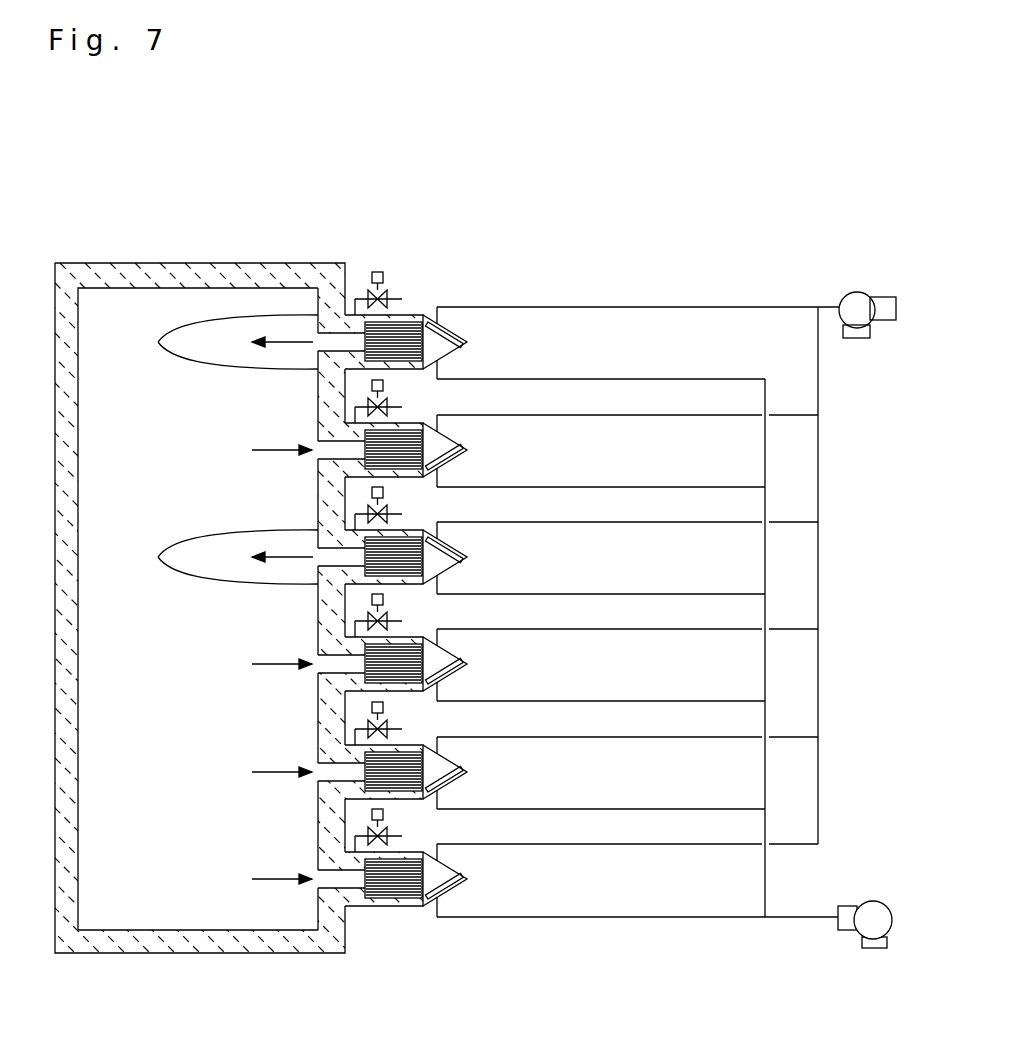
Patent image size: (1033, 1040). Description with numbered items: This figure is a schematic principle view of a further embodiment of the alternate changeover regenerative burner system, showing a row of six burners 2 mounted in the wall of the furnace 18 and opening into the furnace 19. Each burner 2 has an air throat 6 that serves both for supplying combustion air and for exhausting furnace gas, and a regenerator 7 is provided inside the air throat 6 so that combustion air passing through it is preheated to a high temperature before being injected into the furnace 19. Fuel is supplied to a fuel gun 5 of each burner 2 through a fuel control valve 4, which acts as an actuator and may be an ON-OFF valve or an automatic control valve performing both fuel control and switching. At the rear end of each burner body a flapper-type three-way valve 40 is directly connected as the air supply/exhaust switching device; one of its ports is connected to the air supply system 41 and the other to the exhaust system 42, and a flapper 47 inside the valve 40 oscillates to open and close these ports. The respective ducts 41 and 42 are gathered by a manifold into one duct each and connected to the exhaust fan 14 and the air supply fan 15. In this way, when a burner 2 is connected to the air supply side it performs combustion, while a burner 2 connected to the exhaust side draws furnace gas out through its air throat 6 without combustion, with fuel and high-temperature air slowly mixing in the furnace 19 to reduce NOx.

The burner 2 is at (424, 263).
The fuel control valve 4 is at (383, 272).
The fuel gun 5 is at (358, 298).
The air throat 6 is at (322, 325).
The regenerator 7 is at (413, 322).
The exhaust fan 14 is at (865, 313).
The air supply fan 15 is at (870, 920).
The furnace 18 is at (192, 273).
The furnace 19 is at (138, 500).
The flapper-type three-way valve 40 is at (445, 337).
The air supply system 41 is at (598, 380).
The exhaust system 42 is at (582, 308).
The flapper 47 is at (440, 362).